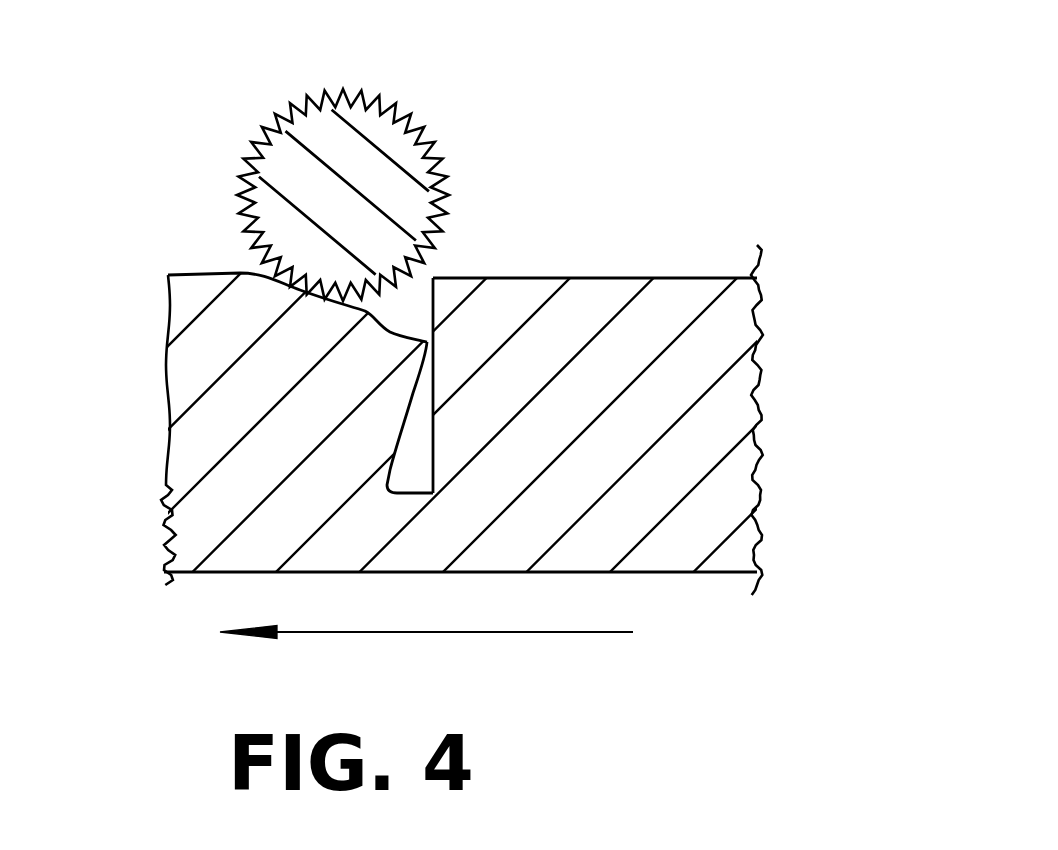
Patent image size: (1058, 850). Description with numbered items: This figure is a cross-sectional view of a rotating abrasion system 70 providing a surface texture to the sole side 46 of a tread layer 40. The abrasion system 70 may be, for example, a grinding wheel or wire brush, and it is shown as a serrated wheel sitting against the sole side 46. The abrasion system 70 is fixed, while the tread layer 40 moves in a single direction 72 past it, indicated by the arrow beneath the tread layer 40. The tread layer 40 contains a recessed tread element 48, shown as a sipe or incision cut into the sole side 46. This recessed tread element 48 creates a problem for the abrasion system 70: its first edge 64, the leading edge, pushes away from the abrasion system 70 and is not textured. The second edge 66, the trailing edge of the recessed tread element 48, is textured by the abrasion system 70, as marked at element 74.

The tread layer 40 is at (655, 387).
The sole side 46 is at (722, 277).
The recessed tread element 48 is at (398, 472).
The first edge 64 is at (427, 342).
The second edge 66 is at (436, 300).
The abrasion system 70 is at (423, 102).
The single direction 72 is at (462, 633).
The textured trailing edge 74 is at (438, 298).